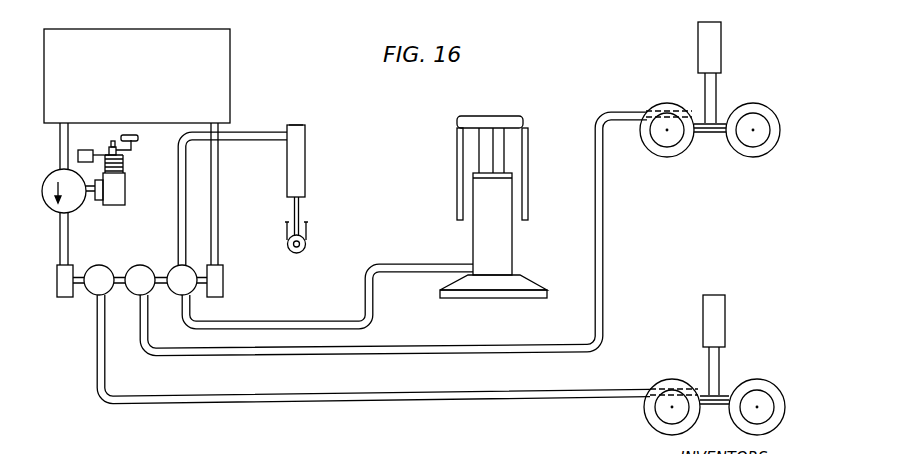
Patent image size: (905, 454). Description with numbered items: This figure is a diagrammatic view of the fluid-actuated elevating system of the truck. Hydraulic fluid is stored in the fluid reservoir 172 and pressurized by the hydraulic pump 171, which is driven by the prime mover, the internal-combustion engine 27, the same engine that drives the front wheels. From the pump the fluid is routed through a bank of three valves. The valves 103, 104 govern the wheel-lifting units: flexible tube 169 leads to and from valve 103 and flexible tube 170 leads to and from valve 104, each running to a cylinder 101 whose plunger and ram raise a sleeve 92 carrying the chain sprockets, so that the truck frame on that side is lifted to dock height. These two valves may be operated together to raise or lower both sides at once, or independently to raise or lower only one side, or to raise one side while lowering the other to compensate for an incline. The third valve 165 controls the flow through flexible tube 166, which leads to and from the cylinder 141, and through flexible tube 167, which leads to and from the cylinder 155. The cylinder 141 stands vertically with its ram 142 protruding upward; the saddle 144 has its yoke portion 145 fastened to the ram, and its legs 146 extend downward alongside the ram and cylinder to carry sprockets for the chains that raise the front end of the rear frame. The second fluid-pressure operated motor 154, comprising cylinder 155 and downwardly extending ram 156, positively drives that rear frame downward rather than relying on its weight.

The fluid reservoir 172 is at (214, 44).
The hydraulic pump 171 is at (55, 213).
The internal-combustion engine 27 is at (125, 185).
The valve 103 is at (99, 297).
The valve 104 is at (148, 297).
The valve 165 is at (190, 297).
The flexible tube 167 is at (236, 140).
The second fluid-pressure operated motor 154 is at (297, 150).
The cylinder 155 is at (293, 125).
The ram 156 is at (299, 210).
The flexible tube 166 is at (380, 264).
The cylinder 141 is at (503, 238).
The ram 142 is at (493, 143).
The saddle 144 is at (457, 122).
The yoke portion 145 is at (484, 118).
The legs 146 is at (457, 171).
The flexible tube 170 is at (603, 245).
The flexible tube 169 is at (287, 401).
The sleeve 92 is at (712, 35).
The cylinder 101 is at (712, 87).